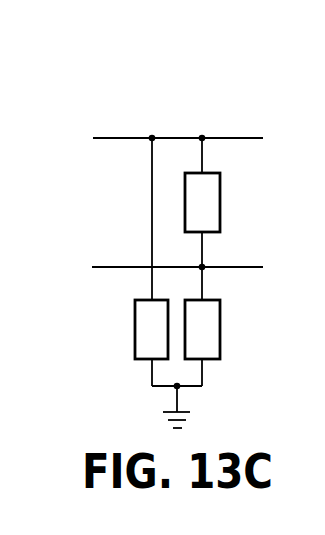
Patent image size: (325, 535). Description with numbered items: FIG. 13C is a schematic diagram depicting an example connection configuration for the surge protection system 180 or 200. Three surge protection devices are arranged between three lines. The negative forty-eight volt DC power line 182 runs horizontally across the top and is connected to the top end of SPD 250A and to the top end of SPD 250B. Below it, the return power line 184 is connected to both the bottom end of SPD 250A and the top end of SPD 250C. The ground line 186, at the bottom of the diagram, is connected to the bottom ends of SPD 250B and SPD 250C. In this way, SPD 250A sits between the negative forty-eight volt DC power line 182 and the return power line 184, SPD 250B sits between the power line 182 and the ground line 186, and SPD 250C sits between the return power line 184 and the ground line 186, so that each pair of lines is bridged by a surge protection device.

The surge protection system 180 is at (161, 234).
The surge protection system 200 is at (120, 109).
The −48 VDC power line 182 is at (222, 138).
The return power line 184 is at (222, 267).
The ground line 186 is at (177, 400).
The SPD 250A is at (220, 183).
The SPD 250B is at (135, 331).
The SPD 250C is at (220, 312).